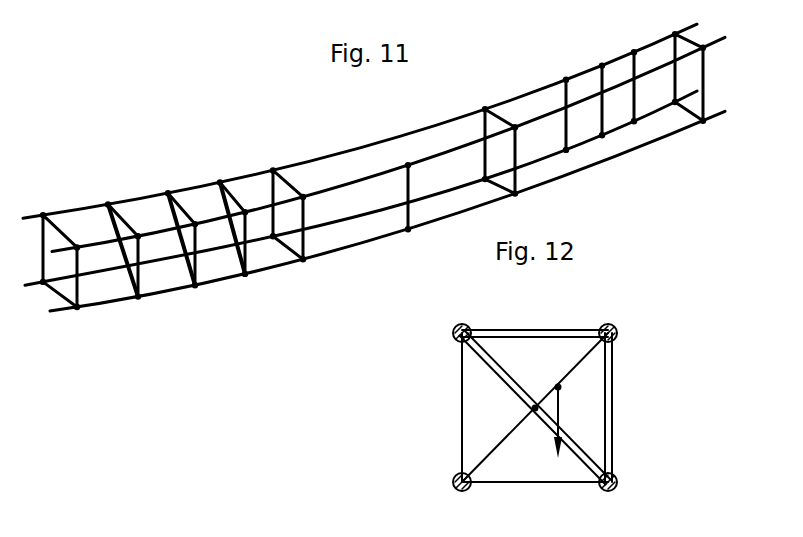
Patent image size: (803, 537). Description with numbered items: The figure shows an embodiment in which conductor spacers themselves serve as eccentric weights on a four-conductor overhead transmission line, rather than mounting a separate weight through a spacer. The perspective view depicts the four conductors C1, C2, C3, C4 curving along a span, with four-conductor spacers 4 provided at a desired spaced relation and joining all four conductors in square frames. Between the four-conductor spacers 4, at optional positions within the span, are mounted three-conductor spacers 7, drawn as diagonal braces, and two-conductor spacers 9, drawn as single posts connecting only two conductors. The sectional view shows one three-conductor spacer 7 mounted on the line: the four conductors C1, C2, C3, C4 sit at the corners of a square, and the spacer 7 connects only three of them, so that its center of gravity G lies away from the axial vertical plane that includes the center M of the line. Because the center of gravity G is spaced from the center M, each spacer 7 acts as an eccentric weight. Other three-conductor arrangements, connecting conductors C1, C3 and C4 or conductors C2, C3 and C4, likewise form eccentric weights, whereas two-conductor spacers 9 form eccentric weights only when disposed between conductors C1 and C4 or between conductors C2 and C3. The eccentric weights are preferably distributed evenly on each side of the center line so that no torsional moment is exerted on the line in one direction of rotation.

In FIG. 11, the conductor C1 is at (100, 247).
In FIG. 12, the conductor C1 is at (626, 322).
In FIG. 11, the conductor C2 is at (77, 211).
In FIG. 12, the conductor C2 is at (468, 327).
In FIG. 11, the conductor C3 is at (108, 279).
In FIG. 12, the conductor C3 is at (458, 490).
In FIG. 11, the conductor C4 is at (102, 308).
In FIG. 12, the conductor C4 is at (610, 491).
In FIG. 11, the four-conductor spacer 4 is at (80, 293).
In FIG. 11, the three-conductor spacer 7 is at (140, 254).
In FIG. 12, the three-conductor spacer 7 is at (553, 330).
In FIG. 11, the two-conductor spacer 9 is at (411, 213).
In FIG. 12, the center of gravity G is at (556, 385).
In FIG. 12, the center M is at (527, 408).